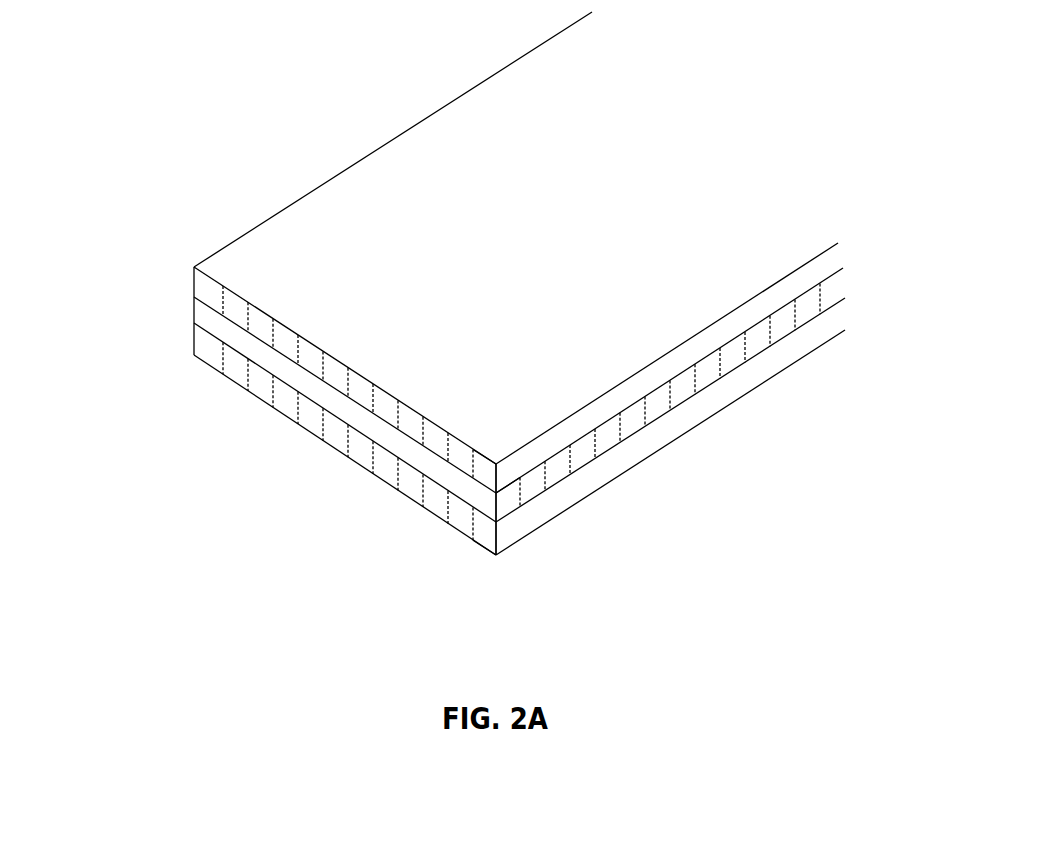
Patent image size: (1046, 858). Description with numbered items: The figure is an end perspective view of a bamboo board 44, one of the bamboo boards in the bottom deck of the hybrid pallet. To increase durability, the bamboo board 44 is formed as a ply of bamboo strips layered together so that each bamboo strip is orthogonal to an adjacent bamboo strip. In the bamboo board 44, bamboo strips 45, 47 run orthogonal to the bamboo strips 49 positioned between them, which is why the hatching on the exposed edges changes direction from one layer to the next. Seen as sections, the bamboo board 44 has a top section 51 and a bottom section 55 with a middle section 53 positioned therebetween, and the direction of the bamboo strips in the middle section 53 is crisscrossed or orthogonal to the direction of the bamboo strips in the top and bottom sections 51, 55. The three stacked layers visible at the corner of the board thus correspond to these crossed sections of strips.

The bamboo board 44 is at (437, 110).
The bamboo strip 45 is at (485, 465).
The bamboo strip 47 is at (507, 500).
The bamboo strip 49 is at (483, 535).
The top section 51 is at (179, 279).
The middle section 53 is at (184, 313).
The bottom section 55 is at (183, 347).